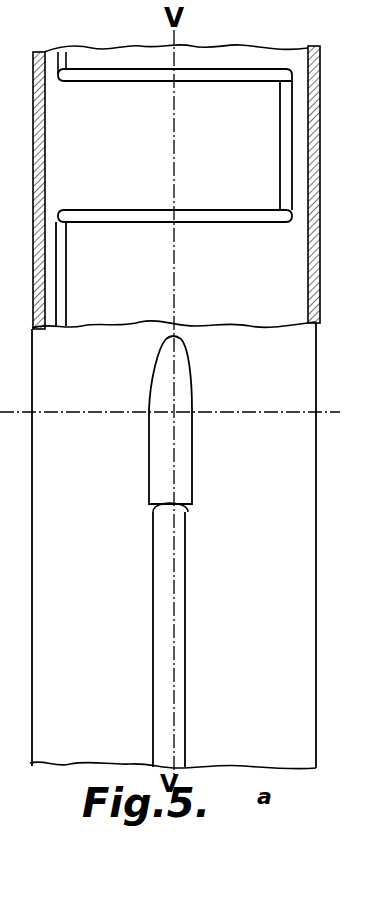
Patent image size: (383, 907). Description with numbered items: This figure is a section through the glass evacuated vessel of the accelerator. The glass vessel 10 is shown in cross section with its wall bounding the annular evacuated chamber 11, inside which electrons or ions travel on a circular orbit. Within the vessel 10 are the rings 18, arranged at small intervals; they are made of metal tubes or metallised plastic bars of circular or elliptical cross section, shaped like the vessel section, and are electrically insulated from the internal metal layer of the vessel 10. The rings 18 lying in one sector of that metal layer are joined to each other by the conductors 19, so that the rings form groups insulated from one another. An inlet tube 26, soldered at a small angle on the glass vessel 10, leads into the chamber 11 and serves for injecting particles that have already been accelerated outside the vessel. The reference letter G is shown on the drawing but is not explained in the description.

The glass vessel 10 is at (320, 150).
The annular evacuated chamber 11 is at (263, 190).
The rings 18 is at (125, 81).
The conductors 19 is at (283, 145).
The inlet tube 26 is at (183, 546).
The guide rod G is at (186, 630).